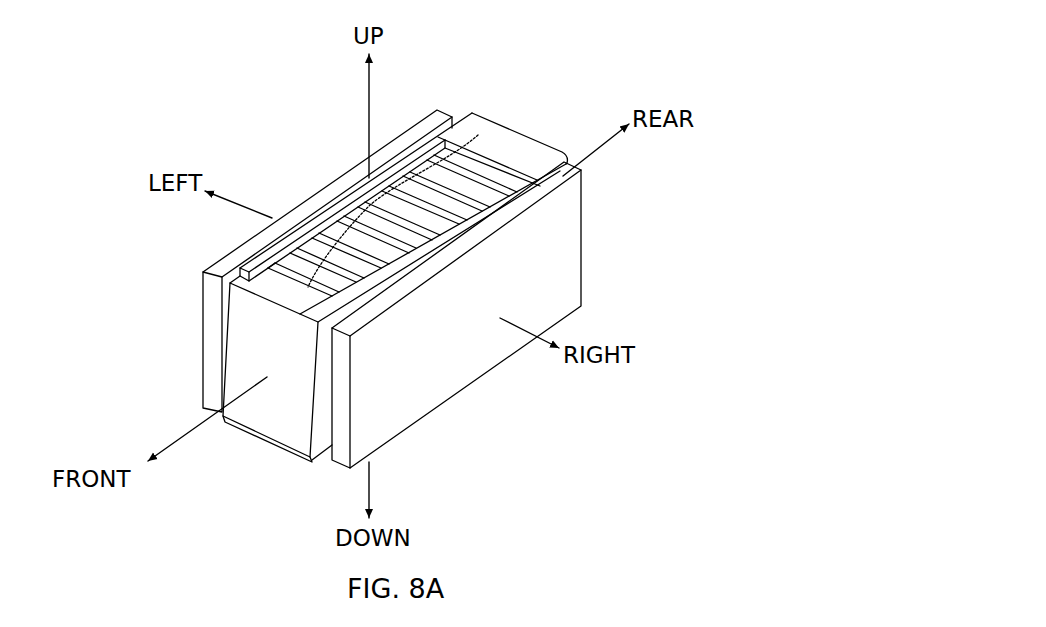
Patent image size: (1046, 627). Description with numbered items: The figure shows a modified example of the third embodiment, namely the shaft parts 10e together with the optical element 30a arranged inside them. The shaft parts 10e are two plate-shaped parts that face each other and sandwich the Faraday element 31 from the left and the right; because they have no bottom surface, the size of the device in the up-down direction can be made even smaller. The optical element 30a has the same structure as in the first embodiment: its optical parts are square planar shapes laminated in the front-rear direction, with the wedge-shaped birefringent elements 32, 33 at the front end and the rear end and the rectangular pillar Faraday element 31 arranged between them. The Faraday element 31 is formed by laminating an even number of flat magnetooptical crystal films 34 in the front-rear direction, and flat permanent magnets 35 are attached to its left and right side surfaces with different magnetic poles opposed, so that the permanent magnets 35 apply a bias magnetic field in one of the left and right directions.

The shaft parts 10e is at (210, 307).
The optical element 30a is at (329, 316).
The Faraday element 31 is at (441, 140).
The birefringent element 32 is at (252, 343).
The birefringent element 33 is at (480, 137).
The magnetooptical crystal films 34 is at (302, 248).
The permanent magnets 35 is at (338, 200).